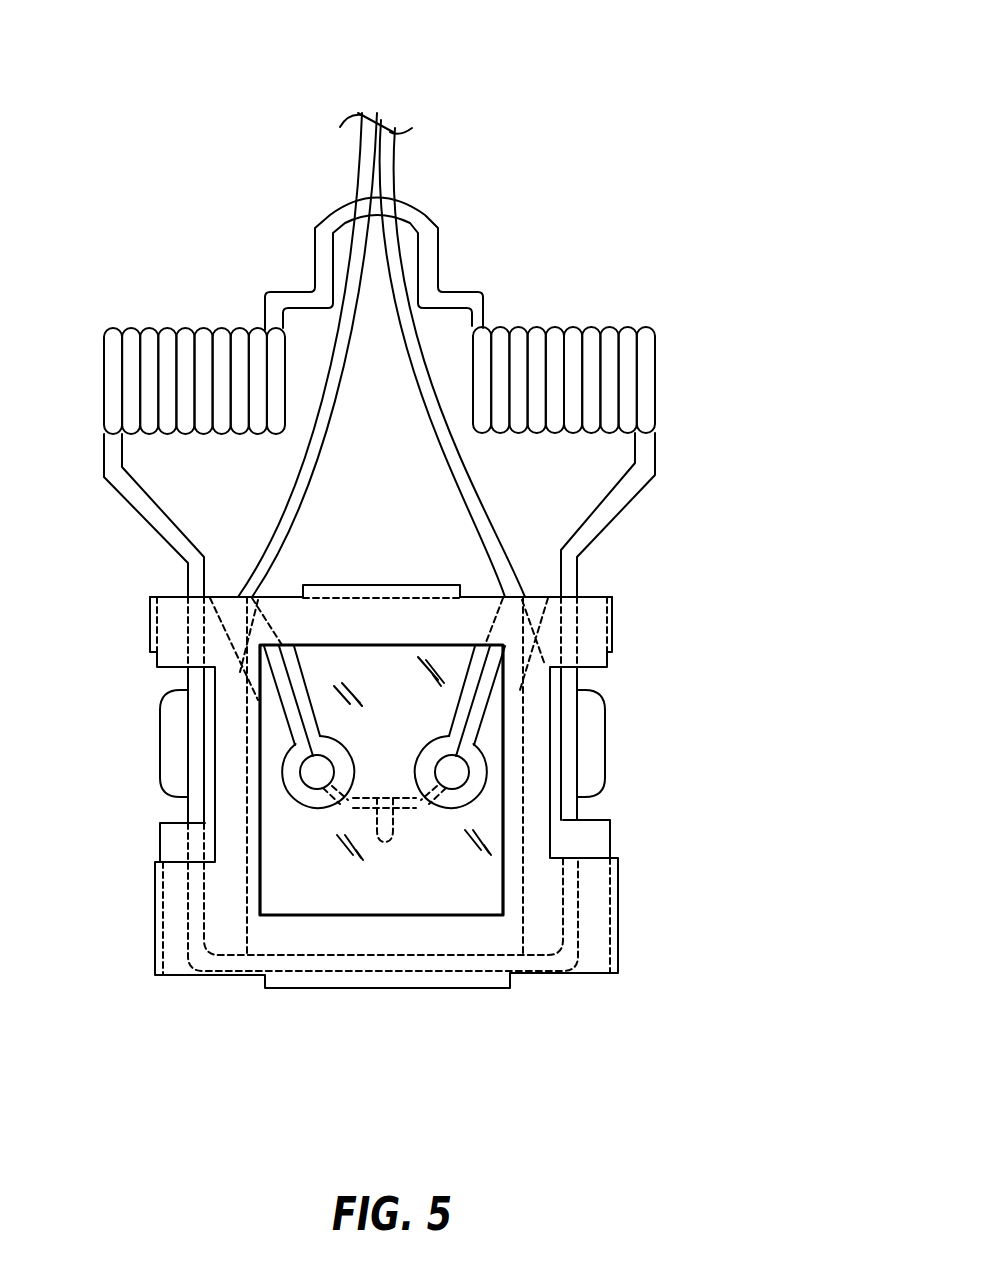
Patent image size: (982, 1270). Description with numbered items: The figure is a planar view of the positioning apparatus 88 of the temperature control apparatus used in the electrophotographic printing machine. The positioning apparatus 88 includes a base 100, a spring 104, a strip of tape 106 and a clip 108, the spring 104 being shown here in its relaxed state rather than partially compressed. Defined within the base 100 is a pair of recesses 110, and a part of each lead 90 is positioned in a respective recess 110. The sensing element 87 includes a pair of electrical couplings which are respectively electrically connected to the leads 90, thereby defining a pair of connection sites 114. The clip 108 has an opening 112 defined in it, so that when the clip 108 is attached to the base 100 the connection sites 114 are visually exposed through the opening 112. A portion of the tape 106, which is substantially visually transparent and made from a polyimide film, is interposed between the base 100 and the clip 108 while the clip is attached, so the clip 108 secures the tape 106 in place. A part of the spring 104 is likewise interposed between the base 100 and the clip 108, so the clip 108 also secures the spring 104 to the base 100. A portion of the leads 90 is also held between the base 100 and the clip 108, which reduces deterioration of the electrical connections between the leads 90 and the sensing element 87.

The positioning apparatus 88 is at (569, 137).
The leads 90 is at (383, 158).
The spring 104 is at (150, 527).
The clip 108 is at (615, 622).
The base 100 is at (606, 702).
The opening 112 is at (340, 650).
The tape 106 is at (388, 662).
The connection sites 114 is at (317, 772).
The recesses 110 is at (311, 799).
The sensing element 87 is at (385, 842).